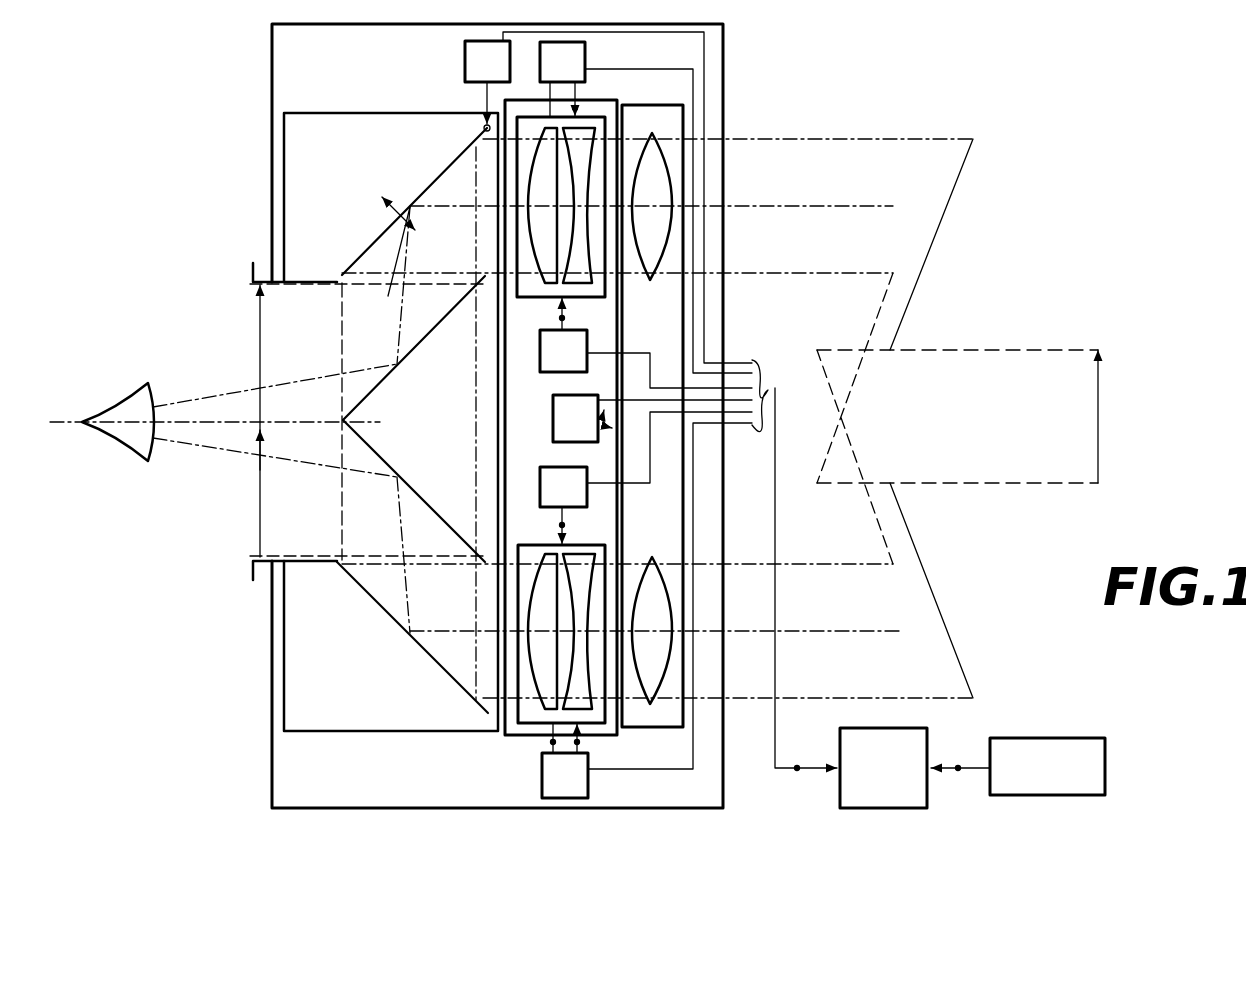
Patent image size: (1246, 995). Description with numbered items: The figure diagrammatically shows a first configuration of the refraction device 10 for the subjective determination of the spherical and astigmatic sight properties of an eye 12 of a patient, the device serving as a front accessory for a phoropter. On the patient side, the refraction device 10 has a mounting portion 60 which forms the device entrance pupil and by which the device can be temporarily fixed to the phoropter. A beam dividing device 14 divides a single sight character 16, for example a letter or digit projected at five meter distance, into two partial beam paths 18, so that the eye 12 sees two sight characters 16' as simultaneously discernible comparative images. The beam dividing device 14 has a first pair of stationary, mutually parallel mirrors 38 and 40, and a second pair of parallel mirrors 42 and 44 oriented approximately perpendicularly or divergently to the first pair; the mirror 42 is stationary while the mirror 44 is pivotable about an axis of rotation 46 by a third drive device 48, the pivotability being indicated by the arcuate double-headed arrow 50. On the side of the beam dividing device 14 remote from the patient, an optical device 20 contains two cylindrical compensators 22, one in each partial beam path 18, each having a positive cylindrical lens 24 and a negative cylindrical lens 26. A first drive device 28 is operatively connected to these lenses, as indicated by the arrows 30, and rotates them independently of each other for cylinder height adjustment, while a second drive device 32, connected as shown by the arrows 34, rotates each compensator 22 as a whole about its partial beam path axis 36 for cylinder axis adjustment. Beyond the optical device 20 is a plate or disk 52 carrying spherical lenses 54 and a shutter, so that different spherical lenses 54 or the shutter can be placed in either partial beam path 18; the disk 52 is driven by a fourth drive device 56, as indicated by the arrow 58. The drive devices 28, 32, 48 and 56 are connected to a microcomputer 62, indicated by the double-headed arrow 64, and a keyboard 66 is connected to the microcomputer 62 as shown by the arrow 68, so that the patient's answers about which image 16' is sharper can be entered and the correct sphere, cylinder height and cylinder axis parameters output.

The refraction device 10 is at (233, 210).
The eye 12 is at (115, 410).
The beam dividing device 14 is at (284, 667).
The sight character 16 is at (997, 416).
The sight characters 16' is at (228, 421).
The partial beam paths 18 is at (805, 180).
The optical device 20 is at (522, 742).
The cylindrical compensator 22 is at (580, 116).
The positive cylindrical lens 24 is at (537, 253).
The negative cylindrical lens 26 is at (573, 150).
The first drive device 28 is at (588, 60).
The arrows 30 is at (548, 90).
The second drive device 32 is at (550, 402).
The arrows 34 is at (562, 318).
The partial beam path axis 36 is at (483, 209).
The mirror 38 is at (363, 588).
The mirror 40 is at (405, 457).
The mirror 42 is at (405, 370).
The mirror 44 is at (393, 218).
The axis of rotation 46 is at (484, 131).
The third drive device 48 is at (465, 60).
The arcuate double-headed arrow 50 is at (389, 420).
The plate or disk 52 is at (686, 320).
The spherical lenses 54 is at (660, 235).
The fourth drive device 56 is at (590, 447).
The arrow 58 is at (768, 392).
The mounting portion 60 is at (306, 563).
The microcomputer 62 is at (883, 768).
The double-headed arrow 64 is at (797, 770).
The keyboard 66 is at (1018, 766).
The arrow 68 is at (958, 770).